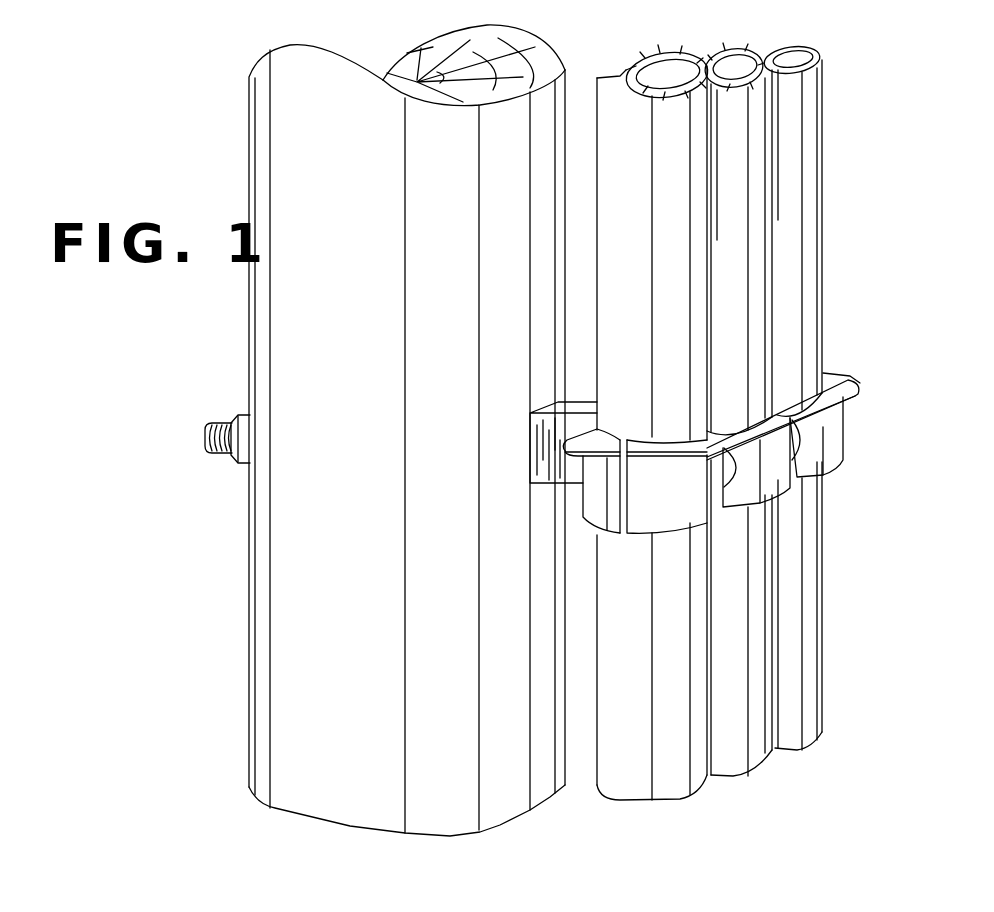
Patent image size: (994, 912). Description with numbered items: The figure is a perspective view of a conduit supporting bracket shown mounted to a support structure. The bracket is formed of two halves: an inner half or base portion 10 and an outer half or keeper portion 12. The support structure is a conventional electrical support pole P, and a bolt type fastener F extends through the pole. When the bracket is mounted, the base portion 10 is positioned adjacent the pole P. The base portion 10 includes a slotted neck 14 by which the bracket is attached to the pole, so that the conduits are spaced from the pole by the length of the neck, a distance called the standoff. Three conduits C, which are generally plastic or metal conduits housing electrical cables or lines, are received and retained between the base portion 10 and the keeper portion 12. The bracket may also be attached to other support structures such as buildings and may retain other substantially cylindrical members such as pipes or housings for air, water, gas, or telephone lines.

The electrical support pole P is at (265, 647).
The bolt type fastener F is at (208, 450).
The conduits C is at (668, 68).
The base portion 10 is at (527, 462).
The keeper portion 12 is at (833, 470).
The slotted neck 14 is at (565, 407).